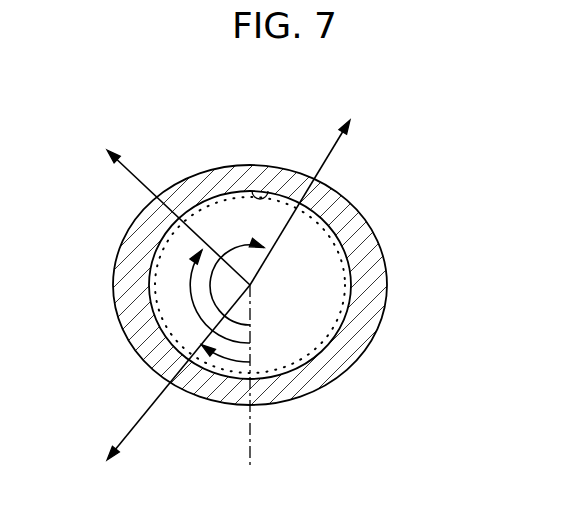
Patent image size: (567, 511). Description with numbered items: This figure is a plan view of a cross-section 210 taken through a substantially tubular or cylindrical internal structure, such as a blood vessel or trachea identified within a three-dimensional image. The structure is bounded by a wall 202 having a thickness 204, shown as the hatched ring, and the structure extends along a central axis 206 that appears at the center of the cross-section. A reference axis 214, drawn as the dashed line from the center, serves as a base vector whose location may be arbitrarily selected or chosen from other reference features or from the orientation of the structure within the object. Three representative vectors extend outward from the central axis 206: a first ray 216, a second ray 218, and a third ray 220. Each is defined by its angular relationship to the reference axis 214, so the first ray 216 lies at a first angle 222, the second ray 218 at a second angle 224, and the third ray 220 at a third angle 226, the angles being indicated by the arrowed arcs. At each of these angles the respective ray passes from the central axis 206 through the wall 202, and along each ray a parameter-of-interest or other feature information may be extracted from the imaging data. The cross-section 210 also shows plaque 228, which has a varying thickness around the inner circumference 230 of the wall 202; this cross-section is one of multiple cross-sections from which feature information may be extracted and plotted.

The wall 202 is at (355, 362).
The thickness 204 is at (385, 257).
The central axis 206 is at (252, 287).
The cross-section 210 is at (395, 108).
The reference axis 214 is at (252, 428).
The first ray 216 is at (128, 433).
The second ray 218 is at (128, 174).
The third ray 220 is at (342, 133).
The first angle 222 is at (218, 357).
The second angle 224 is at (192, 285).
The third angle 226 is at (218, 240).
The plaque 228 is at (165, 328).
The inner circumference 230 is at (284, 190).